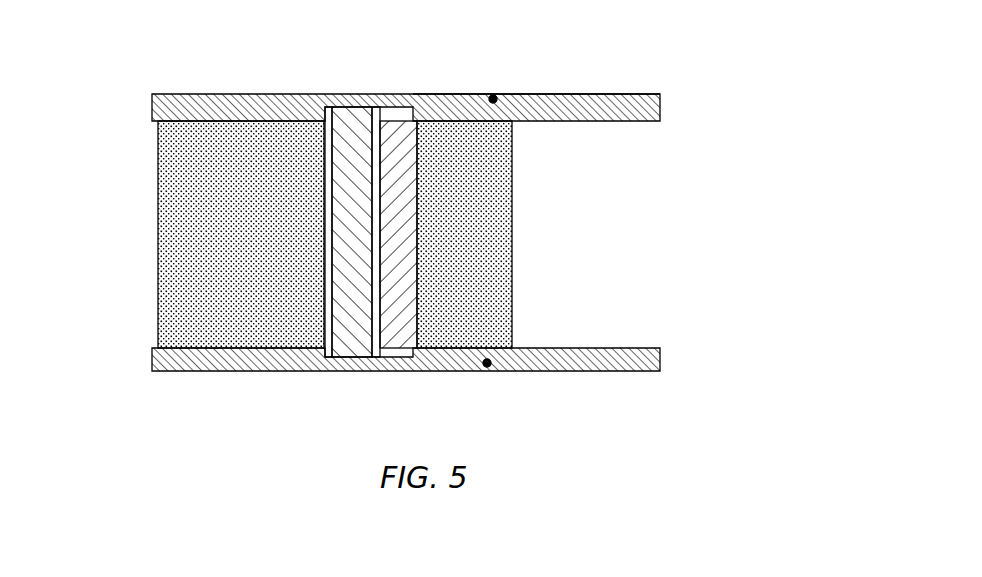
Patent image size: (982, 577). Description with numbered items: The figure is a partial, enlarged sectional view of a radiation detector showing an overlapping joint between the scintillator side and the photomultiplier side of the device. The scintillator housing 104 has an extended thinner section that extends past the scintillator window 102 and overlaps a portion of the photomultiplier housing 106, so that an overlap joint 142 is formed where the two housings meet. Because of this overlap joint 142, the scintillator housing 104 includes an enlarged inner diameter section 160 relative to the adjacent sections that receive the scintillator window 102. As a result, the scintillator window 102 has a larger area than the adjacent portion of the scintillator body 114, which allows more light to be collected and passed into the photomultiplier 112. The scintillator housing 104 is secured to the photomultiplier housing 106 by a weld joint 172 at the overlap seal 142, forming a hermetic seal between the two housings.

The scintillator window 102 is at (351, 95).
The scintillator housing 104 is at (191, 94).
The photomultiplier housing 106 is at (595, 372).
The photomultiplier 112 is at (502, 242).
The scintillator body 114 is at (179, 166).
The overlap joint 142 is at (460, 80).
The enlarged inner diameter section 160 is at (398, 95).
The weld joint 172 is at (505, 97).